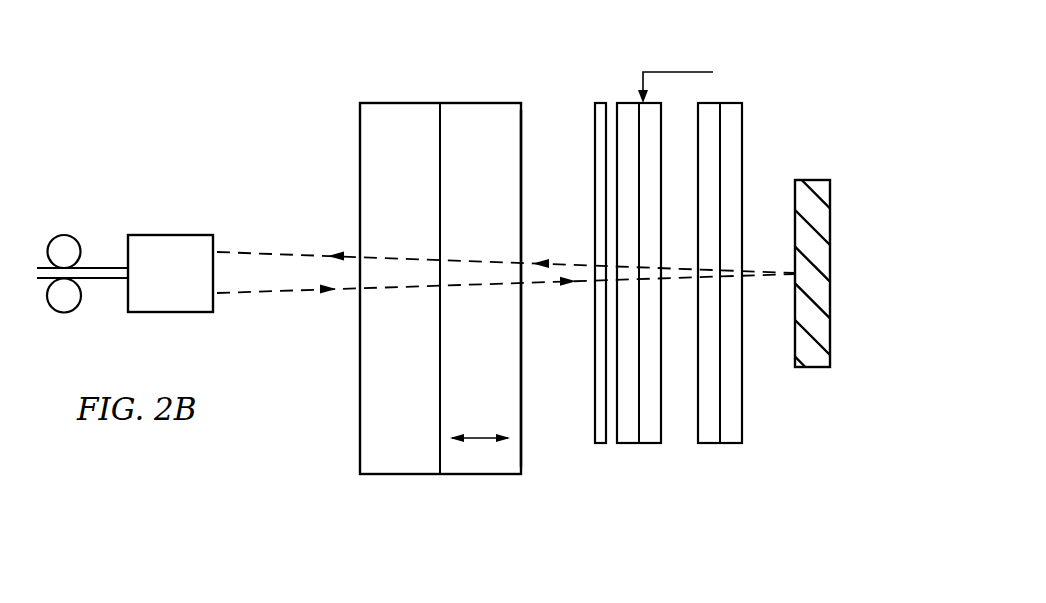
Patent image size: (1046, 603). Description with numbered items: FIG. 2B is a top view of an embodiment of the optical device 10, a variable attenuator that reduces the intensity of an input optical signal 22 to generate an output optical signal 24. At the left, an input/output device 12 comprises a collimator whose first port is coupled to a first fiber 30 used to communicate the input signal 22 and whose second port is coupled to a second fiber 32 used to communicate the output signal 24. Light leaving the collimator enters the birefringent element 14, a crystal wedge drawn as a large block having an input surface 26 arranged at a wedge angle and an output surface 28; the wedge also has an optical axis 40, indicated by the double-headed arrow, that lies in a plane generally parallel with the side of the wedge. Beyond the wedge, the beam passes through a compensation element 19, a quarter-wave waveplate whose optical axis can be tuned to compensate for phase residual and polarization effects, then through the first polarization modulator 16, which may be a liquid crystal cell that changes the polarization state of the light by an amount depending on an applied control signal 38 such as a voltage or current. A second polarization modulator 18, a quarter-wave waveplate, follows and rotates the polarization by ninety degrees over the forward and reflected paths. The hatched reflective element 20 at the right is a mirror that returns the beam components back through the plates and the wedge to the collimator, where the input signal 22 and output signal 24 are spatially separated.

The optical device 10 is at (260, 100).
The input/output device 12 is at (168, 235).
The birefringent element 14 is at (438, 315).
The first polarization modulator 16 is at (647, 444).
The second polarization modulator 18 is at (728, 444).
The compensation element 19 is at (600, 102).
The reflective element 20 is at (812, 368).
The input optical signal 22 is at (262, 294).
The output optical signal 24 is at (262, 252).
The input surface 26 is at (360, 428).
The output surface 28 is at (521, 428).
The first fiber 30 is at (112, 279).
The second fiber 32 is at (112, 266).
The control signal 38 is at (678, 72).
The optical axis 40 is at (475, 435).